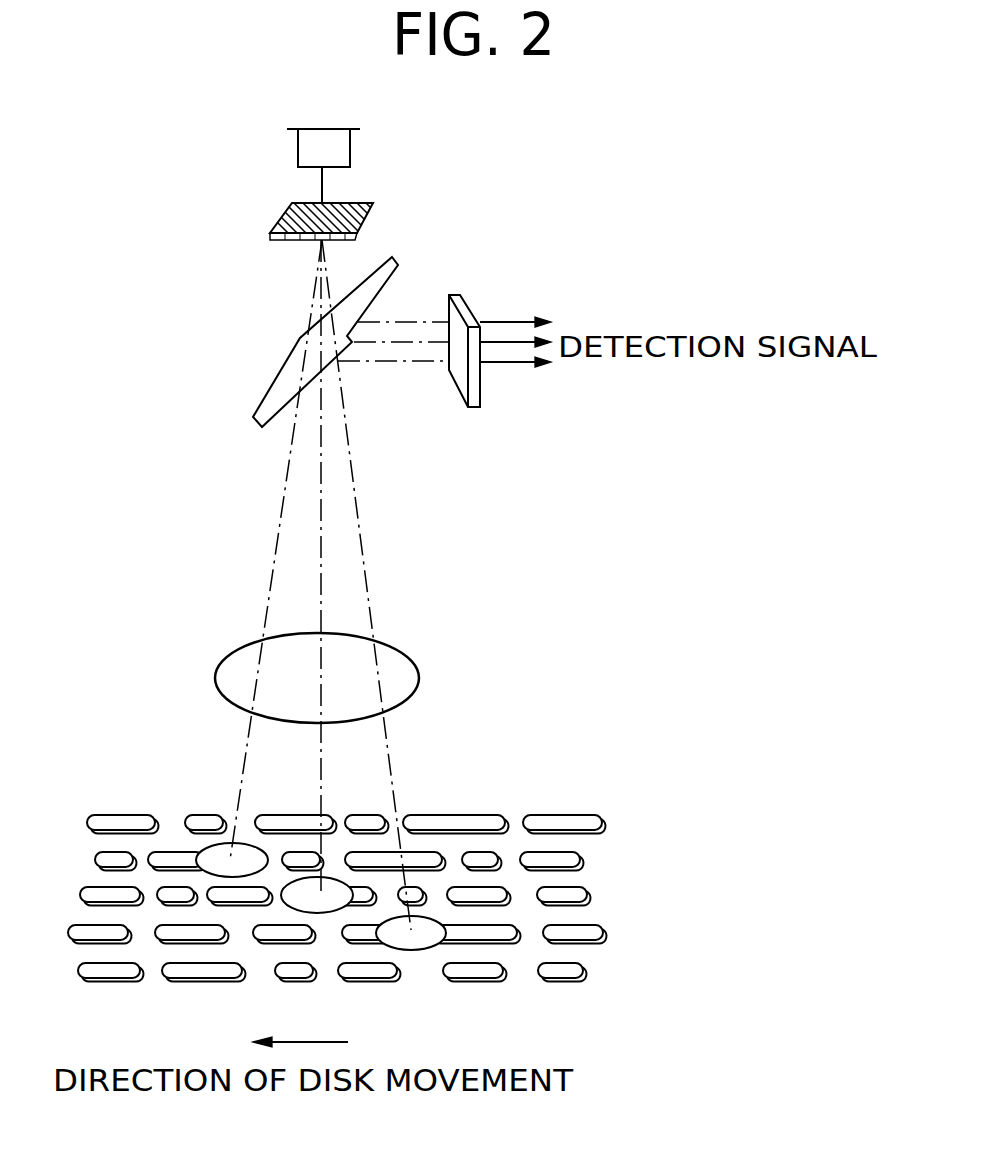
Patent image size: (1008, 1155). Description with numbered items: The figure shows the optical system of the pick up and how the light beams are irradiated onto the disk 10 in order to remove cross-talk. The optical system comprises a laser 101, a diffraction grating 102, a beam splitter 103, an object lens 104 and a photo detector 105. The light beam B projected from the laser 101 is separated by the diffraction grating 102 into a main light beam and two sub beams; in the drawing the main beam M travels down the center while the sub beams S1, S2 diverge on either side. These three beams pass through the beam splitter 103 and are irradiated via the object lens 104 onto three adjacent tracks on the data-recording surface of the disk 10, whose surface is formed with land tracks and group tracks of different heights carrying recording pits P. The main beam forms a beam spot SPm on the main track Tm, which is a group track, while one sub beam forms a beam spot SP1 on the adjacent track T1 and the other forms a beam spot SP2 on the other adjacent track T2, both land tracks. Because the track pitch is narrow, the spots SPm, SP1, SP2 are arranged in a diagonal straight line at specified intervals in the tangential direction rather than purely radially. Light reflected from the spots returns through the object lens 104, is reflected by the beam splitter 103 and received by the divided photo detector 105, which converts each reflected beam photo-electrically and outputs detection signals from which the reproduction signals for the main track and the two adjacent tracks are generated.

The disk 10 is at (656, 760).
The laser 101 is at (300, 144).
The light beam B is at (312, 181).
The diffraction grating 102 is at (282, 222).
The beam splitter 103 is at (282, 380).
The object lens 104 is at (420, 680).
The photo detector 105 is at (452, 377).
The recording mark M is at (320, 485).
The first sub beam S1 is at (360, 519).
The second sub beam S2 is at (280, 518).
The pits P is at (543, 822).
The beam spot SP1 is at (415, 950).
The beam spot SP2 is at (200, 855).
The beam spot SPm is at (330, 878).
The track T1 is at (668, 941).
The track T2 is at (669, 873).
The main track Tm is at (671, 904).